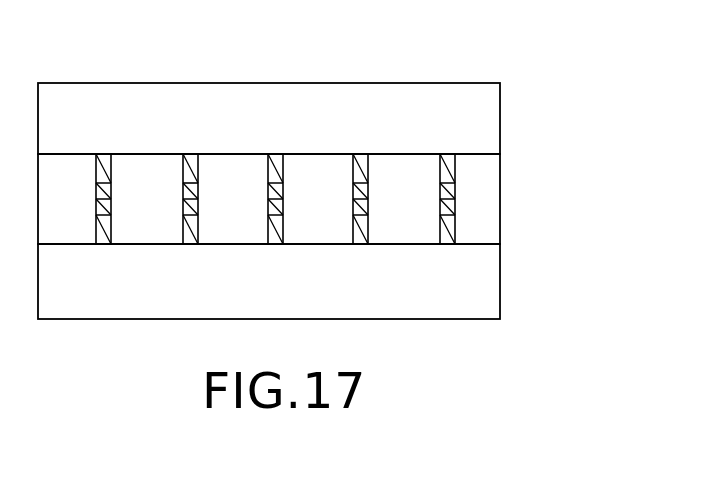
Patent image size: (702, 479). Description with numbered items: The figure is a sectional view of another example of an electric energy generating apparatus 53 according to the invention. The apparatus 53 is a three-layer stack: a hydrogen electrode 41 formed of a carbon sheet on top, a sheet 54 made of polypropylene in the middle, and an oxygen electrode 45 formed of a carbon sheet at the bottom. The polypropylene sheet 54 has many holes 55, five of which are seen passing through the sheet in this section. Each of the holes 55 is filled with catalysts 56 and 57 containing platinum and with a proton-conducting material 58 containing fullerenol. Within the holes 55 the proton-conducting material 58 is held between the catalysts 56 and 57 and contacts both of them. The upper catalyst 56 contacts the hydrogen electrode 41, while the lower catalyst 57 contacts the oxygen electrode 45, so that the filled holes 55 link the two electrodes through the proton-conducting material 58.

The electric energy generating apparatus 53 is at (322, 163).
The hydrogen electrode 41 is at (500, 112).
The sheet 54 is at (500, 182).
The oxygen electrode 45 is at (500, 268).
The holes 55 is at (96, 205).
The catalyst 56 is at (198, 176).
The proton-conducting material 58 is at (198, 203).
The catalyst 57 is at (198, 231).